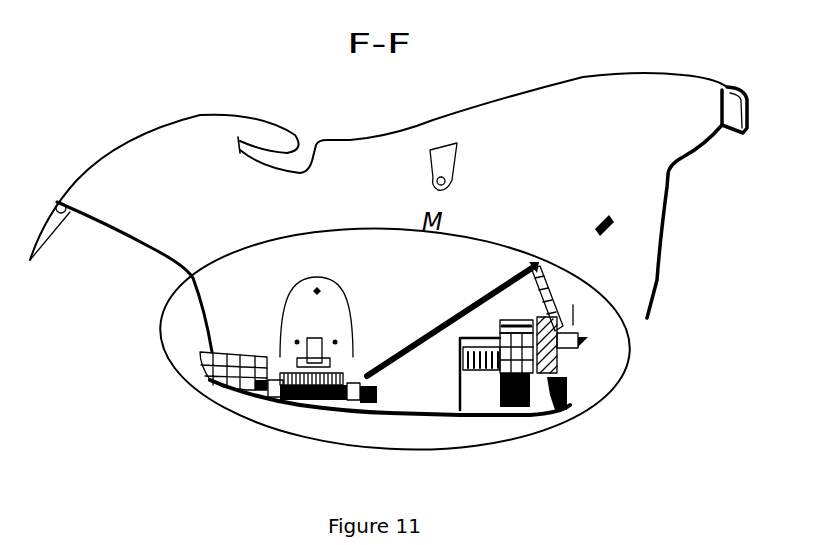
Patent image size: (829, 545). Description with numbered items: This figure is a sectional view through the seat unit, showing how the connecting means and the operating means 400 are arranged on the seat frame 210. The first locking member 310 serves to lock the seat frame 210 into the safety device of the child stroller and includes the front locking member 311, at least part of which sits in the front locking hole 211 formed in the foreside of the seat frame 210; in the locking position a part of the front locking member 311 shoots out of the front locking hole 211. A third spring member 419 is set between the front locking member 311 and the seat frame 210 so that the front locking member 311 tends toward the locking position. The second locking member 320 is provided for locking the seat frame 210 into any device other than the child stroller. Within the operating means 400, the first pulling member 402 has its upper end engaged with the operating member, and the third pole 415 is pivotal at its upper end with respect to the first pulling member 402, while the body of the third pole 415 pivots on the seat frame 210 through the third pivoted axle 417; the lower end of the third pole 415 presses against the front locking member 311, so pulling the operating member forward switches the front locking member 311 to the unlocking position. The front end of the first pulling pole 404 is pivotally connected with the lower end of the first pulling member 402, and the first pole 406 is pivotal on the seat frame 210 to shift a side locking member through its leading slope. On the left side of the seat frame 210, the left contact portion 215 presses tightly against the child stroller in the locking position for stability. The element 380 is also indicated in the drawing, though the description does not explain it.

The seat frame 210 is at (540, 113).
The first pulling member 402 is at (425, 335).
The first pulling pole 404 is at (357, 413).
The first pole 406 is at (282, 403).
The second locking member 320 is at (205, 368).
The third spring member 419 is at (470, 378).
The front locking member 311 is at (588, 340).
The operating means 400 is at (550, 283).
The third pole 415 is at (548, 277).
The left contact portion 215 is at (647, 318).
The third pivoted axle 417 is at (605, 314).
The first locking member 310 is at (580, 357).
The housing 380 is at (593, 357).
The front locking hole 211 is at (567, 380).